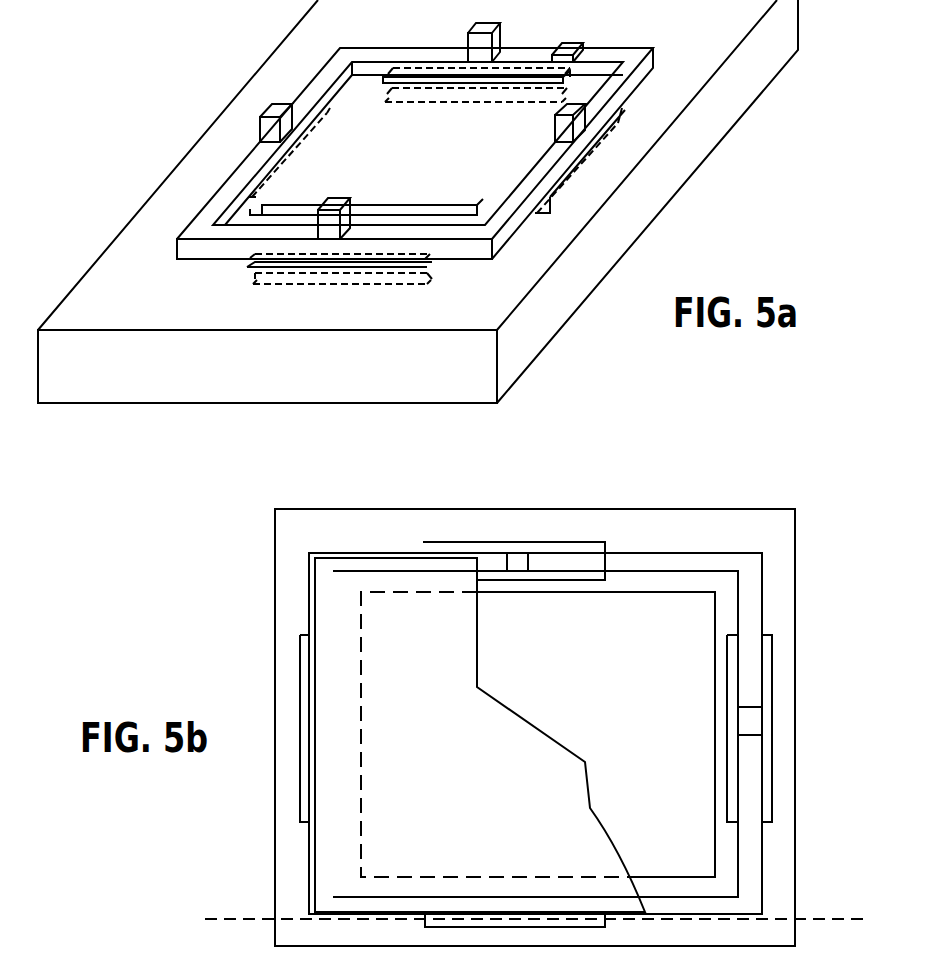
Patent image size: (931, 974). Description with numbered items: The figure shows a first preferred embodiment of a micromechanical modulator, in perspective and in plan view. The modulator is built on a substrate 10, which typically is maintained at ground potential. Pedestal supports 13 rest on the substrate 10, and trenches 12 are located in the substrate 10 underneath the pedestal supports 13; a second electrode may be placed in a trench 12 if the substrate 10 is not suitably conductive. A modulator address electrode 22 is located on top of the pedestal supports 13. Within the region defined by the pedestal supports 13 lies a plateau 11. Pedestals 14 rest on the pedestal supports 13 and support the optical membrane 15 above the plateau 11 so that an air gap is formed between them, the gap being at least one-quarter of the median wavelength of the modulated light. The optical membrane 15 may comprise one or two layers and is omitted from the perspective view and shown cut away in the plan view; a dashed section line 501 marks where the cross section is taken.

In FIG. 5a, the substrate 10 is at (377, 28).
In FIG. 5b, the substrate 10 is at (643, 520).
In FIG. 5a, the plateau 11 is at (433, 175).
In FIG. 5b, the plateau 11 is at (614, 676).
In FIG. 5a, the trenches 12 is at (620, 117).
In FIG. 5b, the trenches 12 is at (768, 673).
In FIG. 5a, the pedestal supports 13 is at (632, 53).
In FIG. 5b, the pedestal supports 13 is at (753, 870).
In FIG. 5a, the pedestals 14 is at (482, 25).
In FIG. 5b, the pedestals 14 is at (753, 720).
In FIG. 5b, the optical membrane 15 is at (473, 798).
In FIG. 5a, the modulator address electrode 22 is at (565, 43).
In FIG. 5b, the section line 501 is at (537, 905).